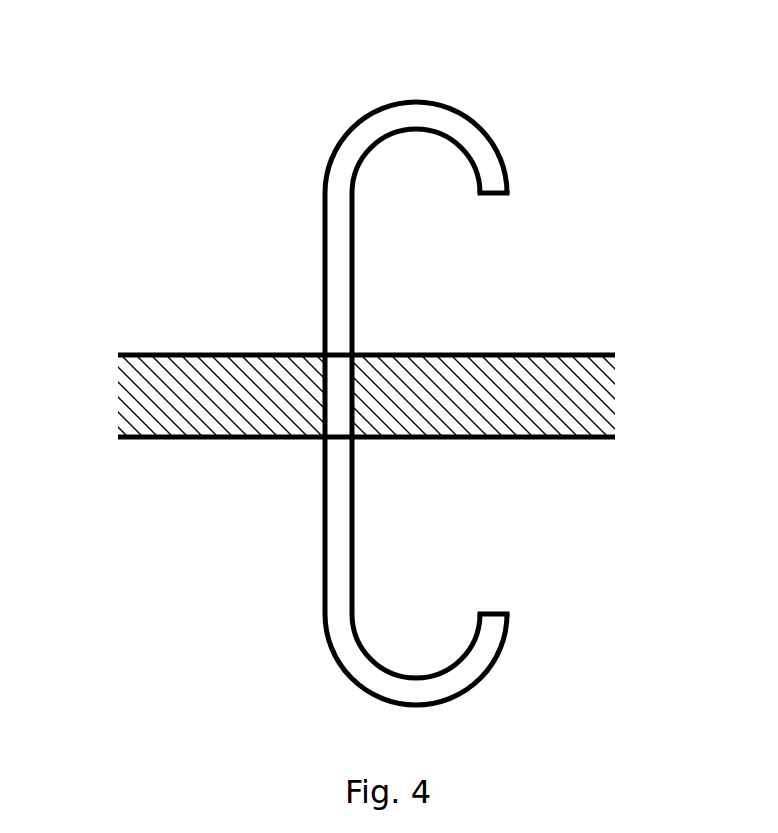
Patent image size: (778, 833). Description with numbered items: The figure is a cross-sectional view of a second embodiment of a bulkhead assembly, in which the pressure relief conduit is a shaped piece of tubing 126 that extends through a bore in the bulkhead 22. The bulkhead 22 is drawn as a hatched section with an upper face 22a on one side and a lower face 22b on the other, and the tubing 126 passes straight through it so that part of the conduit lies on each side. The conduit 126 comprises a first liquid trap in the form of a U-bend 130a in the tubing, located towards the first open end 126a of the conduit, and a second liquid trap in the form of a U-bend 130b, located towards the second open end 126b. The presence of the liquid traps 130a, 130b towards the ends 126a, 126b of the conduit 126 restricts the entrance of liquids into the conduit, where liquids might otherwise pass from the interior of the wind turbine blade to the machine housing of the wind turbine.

The bulkhead 22 is at (374, 390).
The first surface of support member 22a is at (602, 355).
The second surface of support member 22b is at (593, 437).
The tubing 126 is at (446, 369).
The first open end 126a is at (490, 195).
The second open end 126b is at (488, 612).
The U-bend 130a is at (447, 100).
The U-bend 130b is at (470, 687).